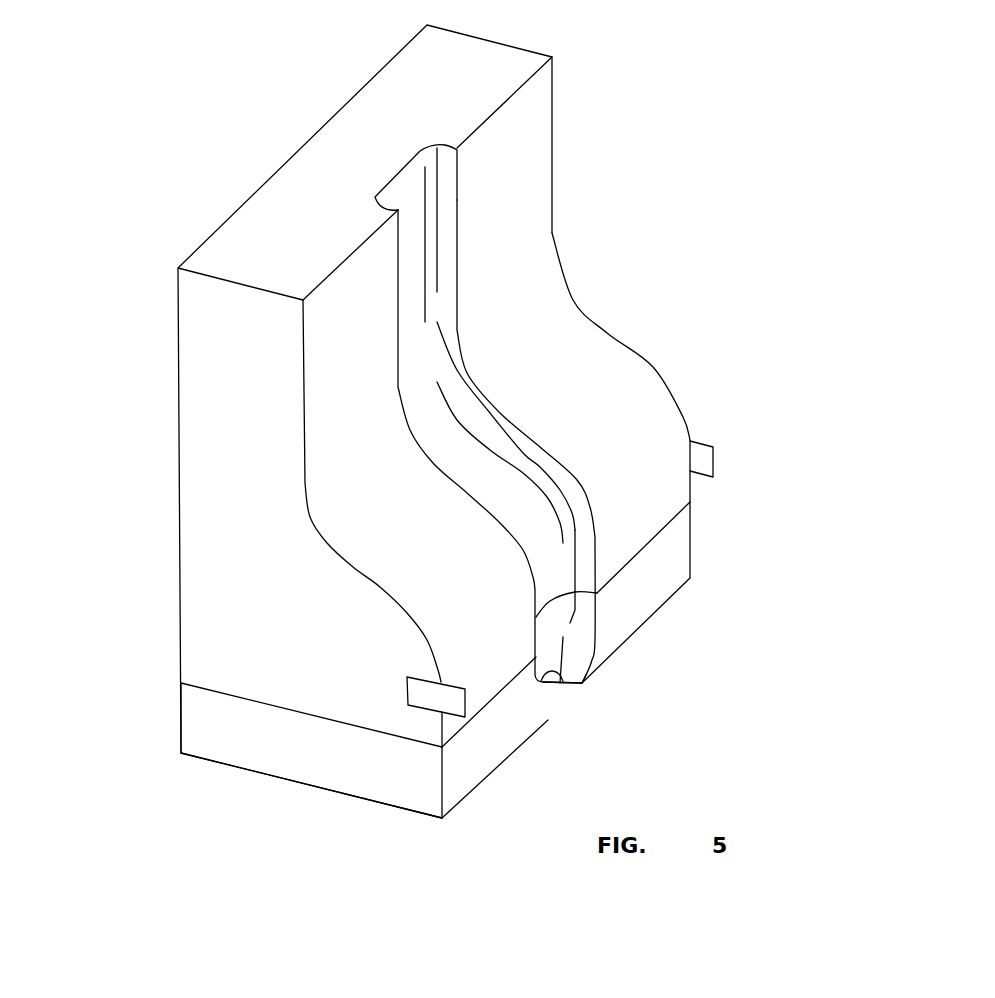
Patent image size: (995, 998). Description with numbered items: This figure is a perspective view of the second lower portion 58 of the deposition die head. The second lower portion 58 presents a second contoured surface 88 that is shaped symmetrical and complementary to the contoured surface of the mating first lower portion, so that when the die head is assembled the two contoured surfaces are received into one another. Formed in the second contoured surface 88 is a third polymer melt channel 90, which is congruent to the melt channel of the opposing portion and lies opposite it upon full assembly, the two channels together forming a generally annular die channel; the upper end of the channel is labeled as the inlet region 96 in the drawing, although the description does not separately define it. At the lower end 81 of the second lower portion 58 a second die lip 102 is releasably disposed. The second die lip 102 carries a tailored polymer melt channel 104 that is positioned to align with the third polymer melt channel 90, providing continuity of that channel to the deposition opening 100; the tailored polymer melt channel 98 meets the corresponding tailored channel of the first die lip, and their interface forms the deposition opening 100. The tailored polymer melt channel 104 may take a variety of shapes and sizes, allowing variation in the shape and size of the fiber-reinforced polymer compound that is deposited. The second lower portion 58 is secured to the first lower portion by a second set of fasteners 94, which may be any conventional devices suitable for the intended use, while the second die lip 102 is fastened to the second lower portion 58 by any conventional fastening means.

The second lower portion 58 is at (160, 150).
The lower end 81 is at (283, 780).
The second contoured surface 88 is at (380, 516).
The third polymer melt channel 90 is at (445, 338).
The second set of fasteners 94 is at (697, 442).
The channel inlet 96 is at (446, 188).
The tailored polymer melt channel 98 is at (582, 617).
The deposition opening 100 is at (567, 688).
The second die lip 102 is at (208, 722).
The tailored polymer melt channel 104 is at (555, 682).